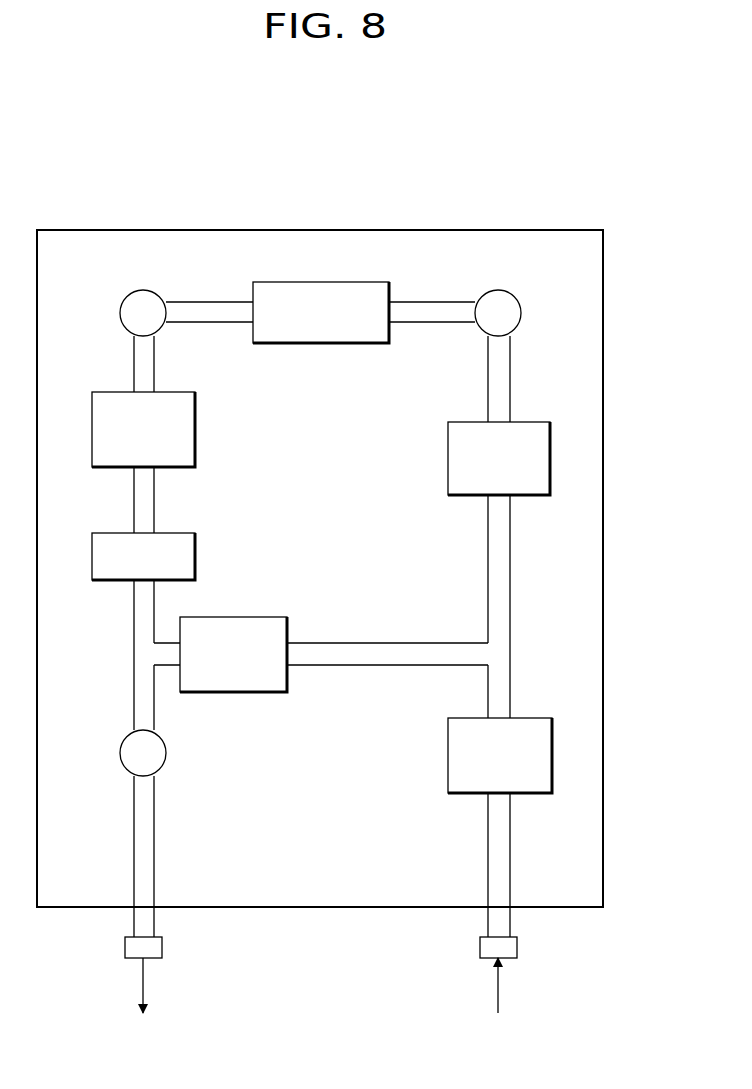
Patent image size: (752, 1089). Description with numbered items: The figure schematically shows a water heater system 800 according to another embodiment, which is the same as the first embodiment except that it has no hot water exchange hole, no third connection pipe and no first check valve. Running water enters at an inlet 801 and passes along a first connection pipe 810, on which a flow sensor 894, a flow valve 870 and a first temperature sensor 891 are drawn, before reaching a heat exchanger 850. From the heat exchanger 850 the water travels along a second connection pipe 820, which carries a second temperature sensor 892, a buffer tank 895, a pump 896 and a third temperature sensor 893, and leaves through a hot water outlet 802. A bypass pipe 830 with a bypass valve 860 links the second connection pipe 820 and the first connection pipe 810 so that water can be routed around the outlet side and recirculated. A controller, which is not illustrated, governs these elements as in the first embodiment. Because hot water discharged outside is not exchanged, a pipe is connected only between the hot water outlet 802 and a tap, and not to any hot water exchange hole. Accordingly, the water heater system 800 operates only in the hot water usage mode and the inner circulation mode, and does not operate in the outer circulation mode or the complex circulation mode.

The water heater system 800 is at (522, 190).
The running water inlet 801 is at (517, 948).
The hot water outlet 802 is at (162, 948).
The first connection pipe 810 is at (510, 612).
The second connection pipe 820 is at (133, 600).
The bypass pipe 830 is at (388, 643).
The heat exchanger 850 is at (323, 280).
The bypass valve 860 is at (237, 615).
The flow valve 870 is at (528, 718).
The first temperature sensor 891 is at (522, 313).
The second temperature sensor 892 is at (120, 313).
The third temperature sensor 893 is at (119, 753).
The flow sensor 894 is at (528, 420).
The buffer tank 895 is at (172, 392).
The pump 896 is at (172, 532).